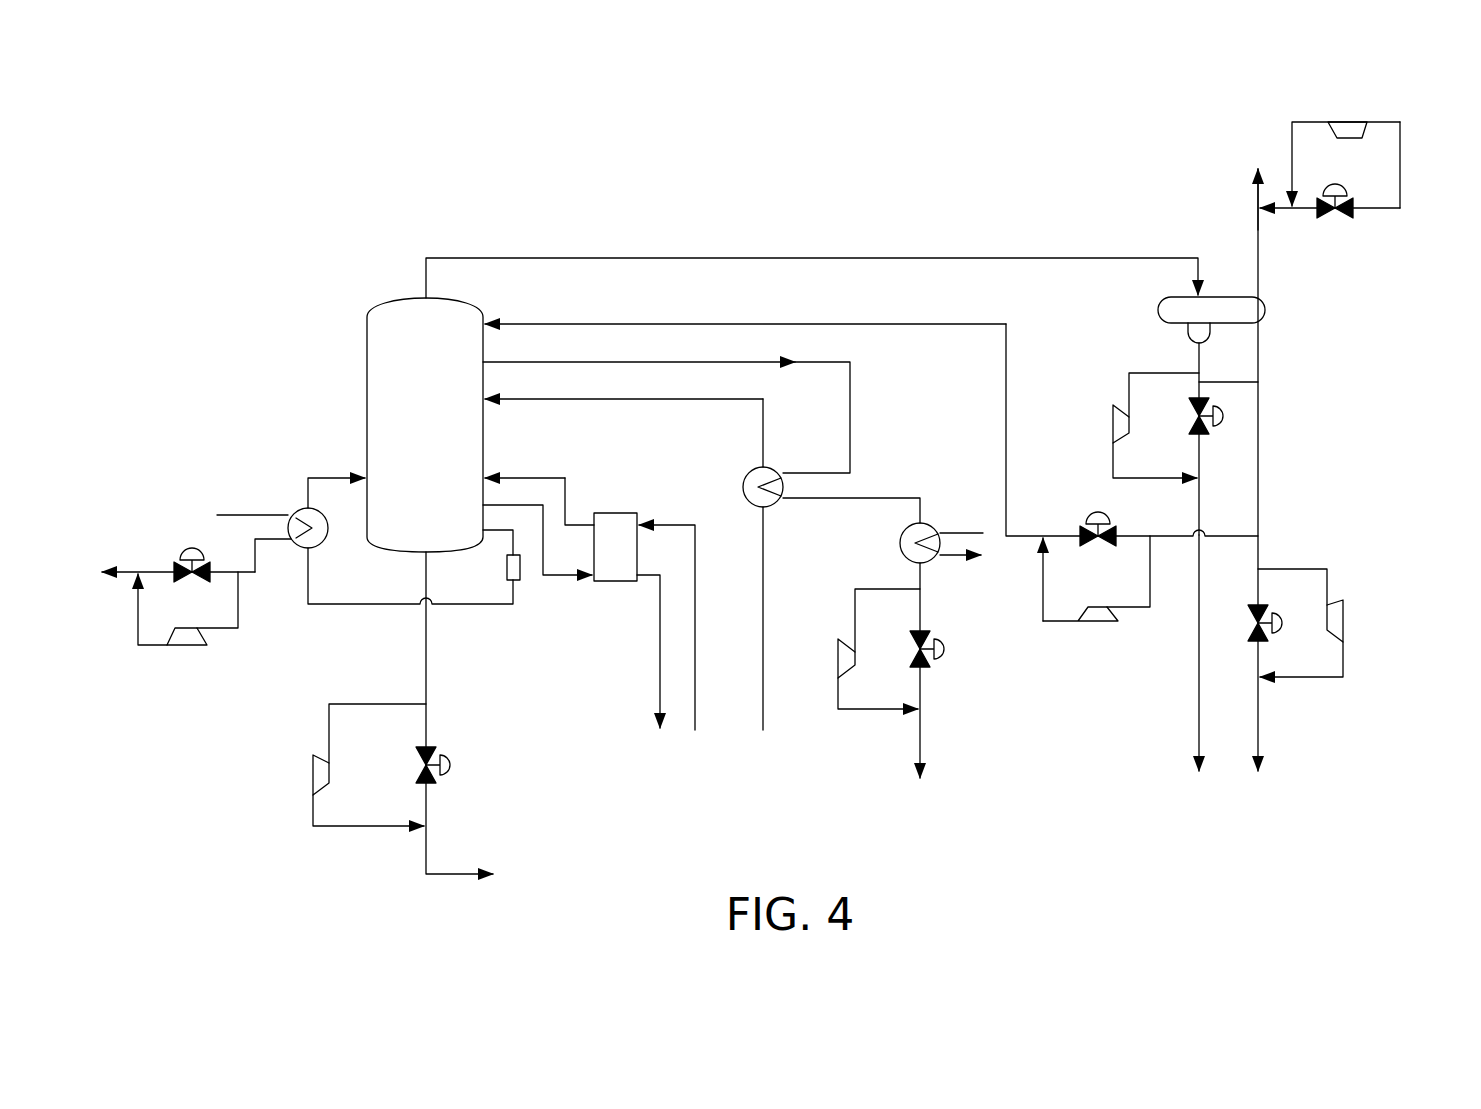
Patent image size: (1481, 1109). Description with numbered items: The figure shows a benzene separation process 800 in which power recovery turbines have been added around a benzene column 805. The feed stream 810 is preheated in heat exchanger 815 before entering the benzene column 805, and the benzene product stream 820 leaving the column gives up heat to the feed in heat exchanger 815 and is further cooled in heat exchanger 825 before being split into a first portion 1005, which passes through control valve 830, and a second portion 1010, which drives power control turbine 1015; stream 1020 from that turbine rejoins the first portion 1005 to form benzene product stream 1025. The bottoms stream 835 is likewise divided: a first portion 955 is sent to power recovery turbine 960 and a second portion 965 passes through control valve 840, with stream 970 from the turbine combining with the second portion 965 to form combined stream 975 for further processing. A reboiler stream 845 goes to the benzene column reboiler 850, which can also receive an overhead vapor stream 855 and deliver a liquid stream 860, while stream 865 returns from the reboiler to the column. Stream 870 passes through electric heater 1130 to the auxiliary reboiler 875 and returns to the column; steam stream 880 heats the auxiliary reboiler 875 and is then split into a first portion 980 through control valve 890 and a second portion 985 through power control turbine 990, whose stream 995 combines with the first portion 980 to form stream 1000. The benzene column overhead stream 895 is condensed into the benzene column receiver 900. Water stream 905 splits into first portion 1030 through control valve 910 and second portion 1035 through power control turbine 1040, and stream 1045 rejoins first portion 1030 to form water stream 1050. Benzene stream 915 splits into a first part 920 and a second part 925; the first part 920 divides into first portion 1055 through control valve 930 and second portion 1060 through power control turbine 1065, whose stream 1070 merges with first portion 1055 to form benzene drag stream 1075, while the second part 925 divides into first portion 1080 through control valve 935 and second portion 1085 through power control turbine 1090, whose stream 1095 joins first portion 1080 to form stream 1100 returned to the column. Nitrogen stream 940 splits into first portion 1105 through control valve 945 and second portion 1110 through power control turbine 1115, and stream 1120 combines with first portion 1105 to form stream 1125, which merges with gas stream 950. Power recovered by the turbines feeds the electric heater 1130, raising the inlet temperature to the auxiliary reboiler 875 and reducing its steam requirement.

The benzene separation process 800 is at (280, 275).
The benzene column 805 is at (385, 300).
The feed stream 810 is at (763, 715).
The heat exchanger 815 is at (743, 487).
The benzene product stream 820 is at (614, 362).
The heat exchanger 825 is at (900, 543).
The control valve 830 is at (945, 649).
The bottoms stream 835 is at (423, 573).
The control valve 840 is at (415, 770).
The reboiler stream 845 is at (502, 503).
The benzene column reboiler 850 is at (630, 513).
The overhead vapor stream 855 is at (695, 715).
The liquid stream 860 is at (660, 682).
The stream 865 is at (555, 478).
The stream 870 is at (530, 510).
The auxiliary reboiler 875 is at (322, 478).
The steam stream 880 is at (243, 515).
The control valve 890 is at (198, 540).
The benzene column overhead stream 895 is at (502, 258).
The benzene column receiver 900 is at (1158, 310).
The water stream 905 is at (1199, 350).
The control valve 910 is at (1232, 412).
The benzene stream 915 is at (1258, 350).
The first part 920 is at (1258, 548).
The second part 925 is at (1235, 536).
The control valve 930 is at (1290, 618).
The control valve 935 is at (1095, 507).
The nitrogen stream 940 is at (1400, 208).
The control valve 945 is at (1340, 220).
The gas stream 950 is at (1258, 230).
The first portion 955 is at (340, 704).
The power recovery turbine 960 is at (313, 770).
The second portion 965 is at (426, 722).
The stream 970 is at (313, 826).
The combined stream 975 is at (426, 843).
The first portion 980 is at (235, 572).
The second portion 985 is at (238, 612).
The power control turbine 990 is at (183, 648).
The stream 995 is at (137, 617).
The stream 1000 is at (132, 572).
The first portion 1005 is at (920, 617).
The second portion 1010 is at (855, 589).
The power control turbine 1015 is at (835, 668).
The stream 1020 is at (872, 709).
The benzene product stream 1025 is at (920, 723).
The first portion 1030 is at (1258, 382).
The second portion 1035 is at (1129, 385).
The power control turbine 1040 is at (1113, 413).
The stream 1045 is at (1112, 458).
The water stream 1050 is at (1199, 505).
The first portion 1055 is at (1255, 578).
The second portion 1060 is at (1327, 575).
The power control turbine 1065 is at (1343, 623).
The stream 1070 is at (1318, 677).
The benzene drag stream 1075 is at (1258, 740).
The first portion 1080 is at (1147, 540).
The second portion 1085 is at (1152, 585).
The power control turbine 1090 is at (1097, 622).
The stream 1095 is at (1043, 578).
The stream 1100 is at (1003, 530).
The first portion 1105 is at (1400, 212).
The second portion 1110 is at (1400, 160).
The power control turbine 1115 is at (1349, 120).
The stream 1120 is at (1292, 138).
The stream 1125 is at (1292, 212).
The electric heater 1130 is at (520, 565).